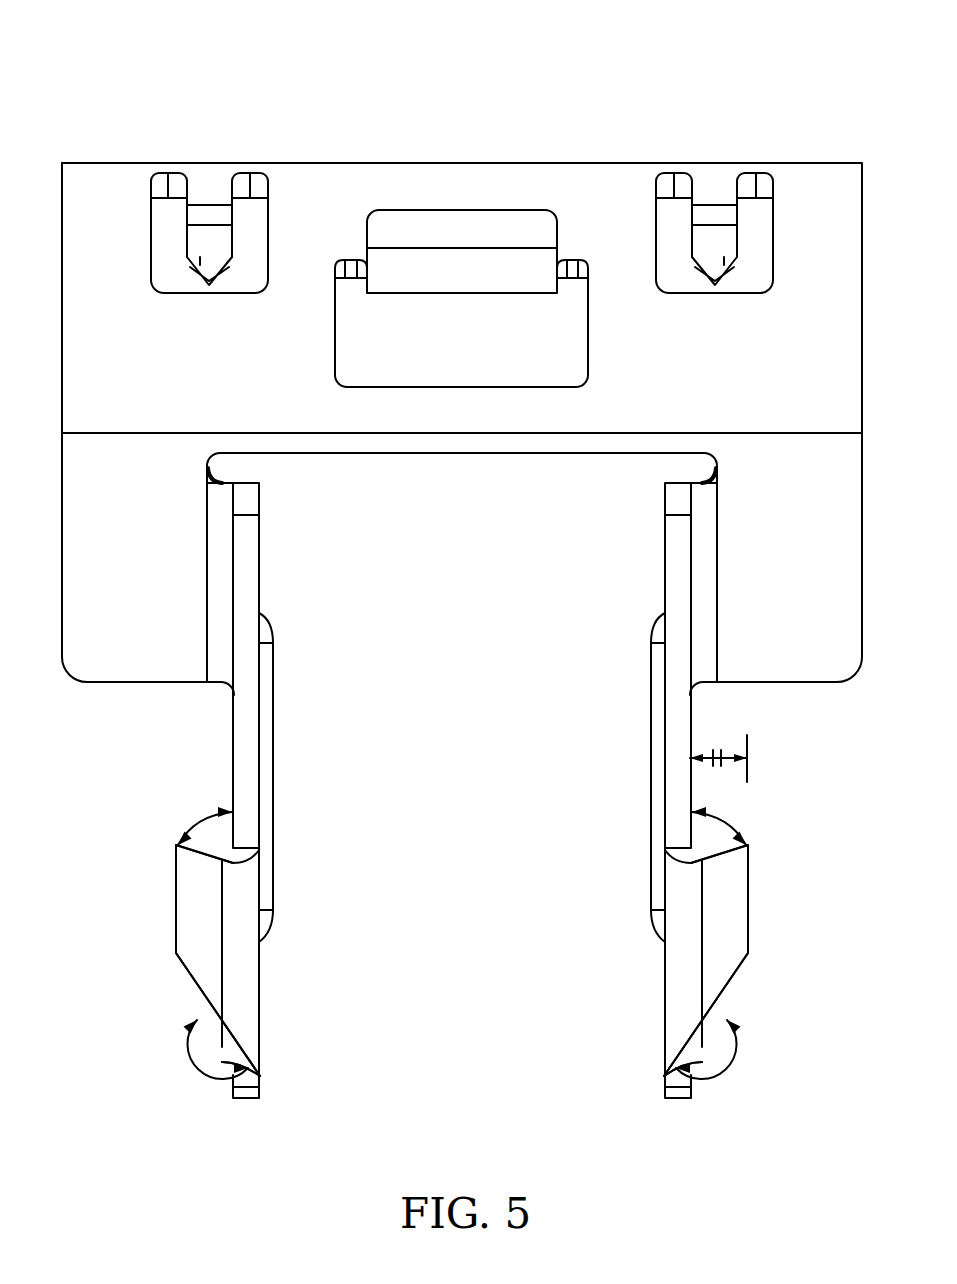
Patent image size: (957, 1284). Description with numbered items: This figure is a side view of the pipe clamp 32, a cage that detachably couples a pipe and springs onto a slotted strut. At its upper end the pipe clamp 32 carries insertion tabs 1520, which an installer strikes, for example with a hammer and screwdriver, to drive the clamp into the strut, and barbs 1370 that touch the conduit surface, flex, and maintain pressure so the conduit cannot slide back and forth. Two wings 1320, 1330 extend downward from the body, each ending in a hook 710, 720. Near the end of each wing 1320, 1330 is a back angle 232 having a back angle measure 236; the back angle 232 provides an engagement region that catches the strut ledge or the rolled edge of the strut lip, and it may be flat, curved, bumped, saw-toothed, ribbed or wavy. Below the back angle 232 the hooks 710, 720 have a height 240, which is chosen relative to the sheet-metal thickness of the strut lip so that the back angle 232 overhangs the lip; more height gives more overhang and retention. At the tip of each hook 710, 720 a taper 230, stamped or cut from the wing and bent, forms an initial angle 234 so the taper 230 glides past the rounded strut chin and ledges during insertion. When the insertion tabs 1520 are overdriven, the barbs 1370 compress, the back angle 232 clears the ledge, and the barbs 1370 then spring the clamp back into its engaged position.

The pipe clamp 32 is at (468, 66).
The insertion tab 1520 is at (478, 235).
The barb 1370 is at (207, 280).
The first wing 1320 is at (248, 733).
The second wing 1330 is at (667, 733).
The hook height 240 is at (718, 752).
The back angle αB 236 is at (190, 832).
The back angle 232 is at (195, 857).
The first hook 710 is at (176, 937).
The second hook 720 is at (747, 920).
The taper 230 is at (206, 990).
The initial angle αI 234 is at (218, 1074).